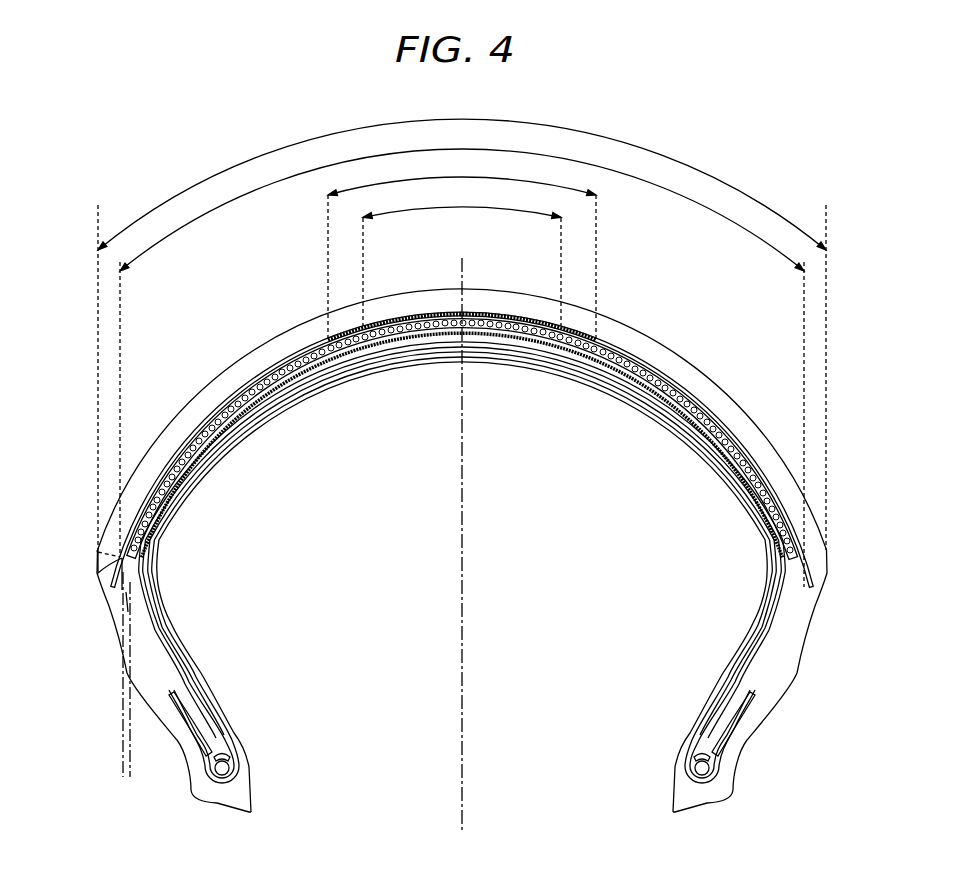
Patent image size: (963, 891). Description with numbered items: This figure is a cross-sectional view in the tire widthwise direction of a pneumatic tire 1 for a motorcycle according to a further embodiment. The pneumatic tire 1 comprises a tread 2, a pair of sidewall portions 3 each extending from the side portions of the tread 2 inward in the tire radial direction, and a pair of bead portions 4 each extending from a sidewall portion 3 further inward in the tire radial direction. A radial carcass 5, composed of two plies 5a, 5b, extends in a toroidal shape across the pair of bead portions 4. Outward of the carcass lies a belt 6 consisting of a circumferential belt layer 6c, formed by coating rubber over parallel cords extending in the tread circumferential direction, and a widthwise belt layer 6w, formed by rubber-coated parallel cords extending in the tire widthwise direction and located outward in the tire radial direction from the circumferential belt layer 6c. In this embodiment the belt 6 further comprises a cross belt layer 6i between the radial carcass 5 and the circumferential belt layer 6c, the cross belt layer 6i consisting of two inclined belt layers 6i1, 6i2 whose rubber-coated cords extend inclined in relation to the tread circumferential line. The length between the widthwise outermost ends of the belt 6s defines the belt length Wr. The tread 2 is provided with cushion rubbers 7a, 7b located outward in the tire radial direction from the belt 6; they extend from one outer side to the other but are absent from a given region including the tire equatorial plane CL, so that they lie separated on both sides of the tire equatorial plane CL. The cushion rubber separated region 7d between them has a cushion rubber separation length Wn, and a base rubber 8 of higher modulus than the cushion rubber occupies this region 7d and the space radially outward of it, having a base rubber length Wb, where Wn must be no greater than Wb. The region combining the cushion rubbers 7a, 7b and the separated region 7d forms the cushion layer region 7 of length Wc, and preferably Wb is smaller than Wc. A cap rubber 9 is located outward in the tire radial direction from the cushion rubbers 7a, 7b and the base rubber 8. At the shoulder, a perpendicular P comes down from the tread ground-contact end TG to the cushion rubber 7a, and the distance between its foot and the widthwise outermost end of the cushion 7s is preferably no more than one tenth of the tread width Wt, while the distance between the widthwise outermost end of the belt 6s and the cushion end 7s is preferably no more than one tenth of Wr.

The pneumatic tire 1 is at (712, 316).
The tread 2 is at (243, 347).
The sidewall portion 3 is at (803, 677).
The bead portion 4 is at (747, 756).
The radial carcass 5 is at (612, 680).
The carcass ply 5a is at (700, 750).
The carcass ply 5b is at (710, 715).
The belt 6 is at (87, 808).
The widthwise belt layer 6w is at (123, 758).
The circumferential belt layer 6c is at (130, 758).
The cross belt layer 6i is at (577, 433).
The inclined belt layer 6i1 is at (665, 408).
The inclined belt layer 6i2 is at (700, 436).
The widthwise outermost end of the belt 6s is at (130, 607).
The cushion layer region 7 is at (450, 428).
The cushion rubber 7a is at (317, 362).
The cushion rubber 7b is at (612, 352).
The cushion rubber separated region 7d is at (402, 338).
The widthwise outermost end of the cushion 7s is at (112, 607).
The base rubber 8 is at (512, 313).
The cap rubber 9 is at (627, 330).
The perpendicular P is at (98, 573).
The tread ground-contact end TG is at (462, 364).
The tire equatorial plane CL is at (462, 528).
The tread width Wt is at (462, 168).
The length of the belt Wr is at (462, 353).
The length of the cushion layer region Wc is at (480, 135).
The length of the base rubber Wb is at (462, 244).
The cushion rubber separation length Wn is at (462, 252).